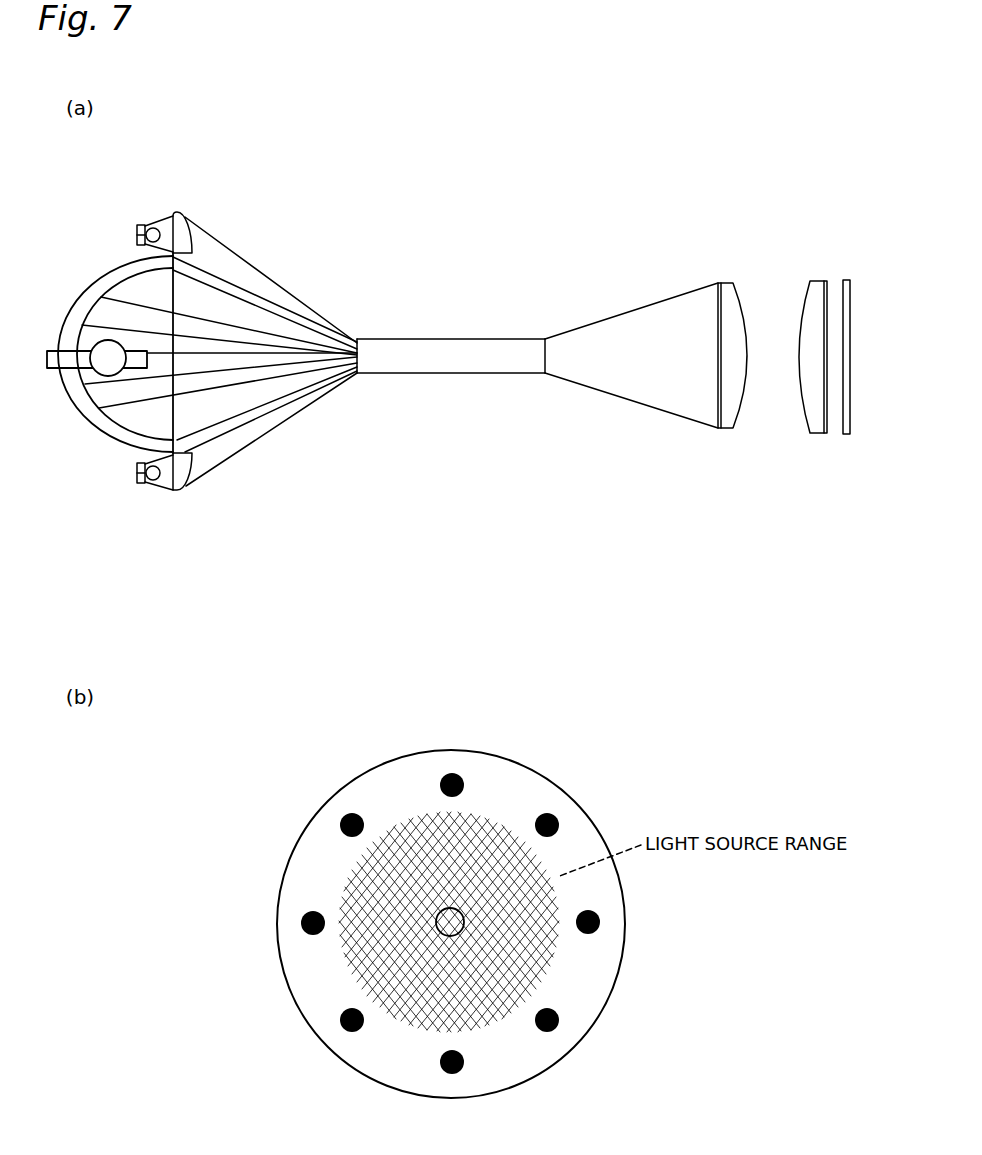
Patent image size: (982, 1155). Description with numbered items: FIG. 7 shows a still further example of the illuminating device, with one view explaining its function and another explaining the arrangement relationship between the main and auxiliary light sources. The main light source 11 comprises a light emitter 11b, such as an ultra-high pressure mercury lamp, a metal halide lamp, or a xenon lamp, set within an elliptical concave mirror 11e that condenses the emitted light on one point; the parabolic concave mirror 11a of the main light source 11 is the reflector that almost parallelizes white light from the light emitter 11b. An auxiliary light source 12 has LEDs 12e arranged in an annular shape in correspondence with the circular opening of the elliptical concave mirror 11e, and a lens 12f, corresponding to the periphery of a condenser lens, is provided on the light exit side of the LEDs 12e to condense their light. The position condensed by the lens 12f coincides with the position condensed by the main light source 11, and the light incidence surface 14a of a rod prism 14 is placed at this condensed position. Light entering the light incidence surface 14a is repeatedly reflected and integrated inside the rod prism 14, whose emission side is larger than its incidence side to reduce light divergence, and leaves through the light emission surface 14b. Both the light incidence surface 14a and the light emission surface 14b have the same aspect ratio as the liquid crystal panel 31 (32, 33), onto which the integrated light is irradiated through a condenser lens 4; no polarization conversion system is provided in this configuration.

The main light source 11 is at (93, 238).
The parabolic concave mirror 11a is at (533, 765).
The light emitter 11b is at (102, 374).
The elliptical concave mirror 11e is at (78, 409).
The auxiliary light source 12 is at (189, 200).
The LEDs 12e is at (139, 225).
The lens 12f is at (183, 217).
The rod prism 14 is at (460, 338).
The light incidence surface 14a is at (357, 376).
The light emission surface 14b is at (546, 375).
The condenser lens 4 is at (731, 283).
The liquid crystal panel 31 is at (847, 280).
The liquid crystal panel 32 is at (813, 357).
The liquid crystal panel 33 is at (846, 357).